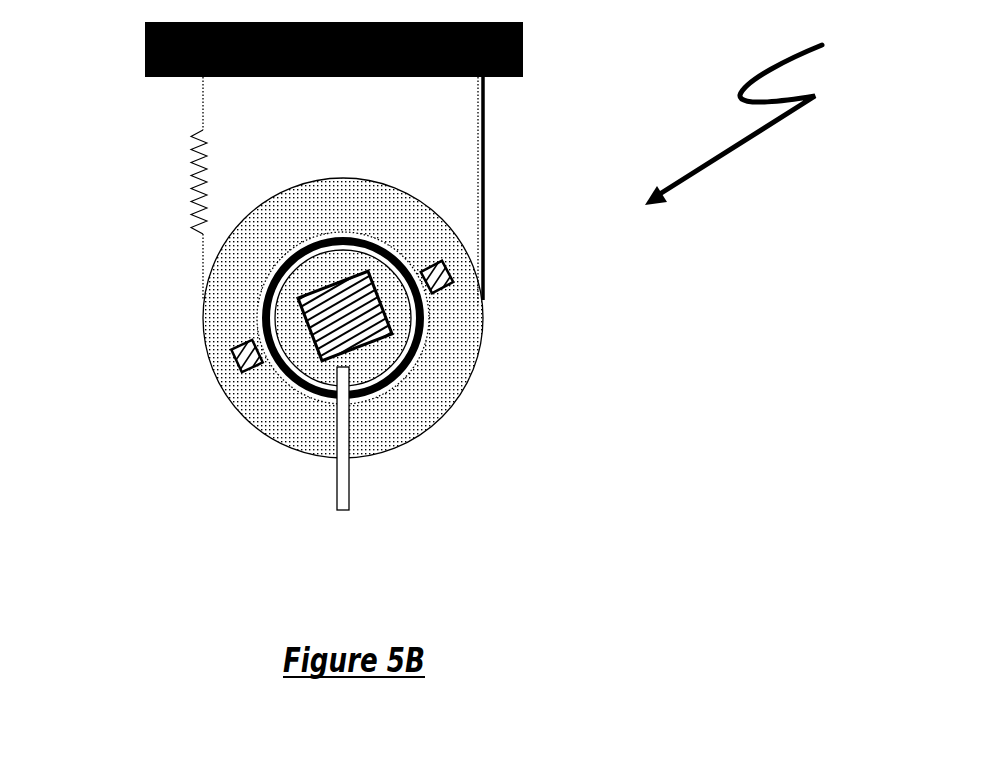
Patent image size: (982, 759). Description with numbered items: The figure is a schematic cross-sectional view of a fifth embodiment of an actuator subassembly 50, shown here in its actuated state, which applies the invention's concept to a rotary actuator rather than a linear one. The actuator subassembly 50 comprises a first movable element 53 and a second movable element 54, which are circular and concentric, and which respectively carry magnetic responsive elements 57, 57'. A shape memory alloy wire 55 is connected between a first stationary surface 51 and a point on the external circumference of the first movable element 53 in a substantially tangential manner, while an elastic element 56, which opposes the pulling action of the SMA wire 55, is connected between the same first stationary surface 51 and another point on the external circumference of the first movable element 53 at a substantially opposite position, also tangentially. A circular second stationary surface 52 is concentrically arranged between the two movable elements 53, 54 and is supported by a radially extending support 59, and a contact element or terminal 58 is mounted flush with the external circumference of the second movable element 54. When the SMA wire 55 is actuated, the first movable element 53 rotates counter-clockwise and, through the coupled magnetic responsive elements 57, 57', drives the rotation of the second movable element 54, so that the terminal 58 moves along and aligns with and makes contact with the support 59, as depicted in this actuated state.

The actuator subassembly 50 is at (758, 112).
The first stationary surface 51 is at (515, 77).
The second stationary surface 52 is at (370, 400).
The first movable element 53 is at (273, 413).
The second movable element 54 is at (378, 355).
The shape memory alloy wire 55 is at (483, 200).
The elastic element 56 is at (197, 170).
The magnetic responsive element 57 is at (185, 373).
The magnetic responsive element 57' is at (364, 211).
The contact element (terminal) 58 is at (357, 400).
The radially extending support 59 is at (338, 512).